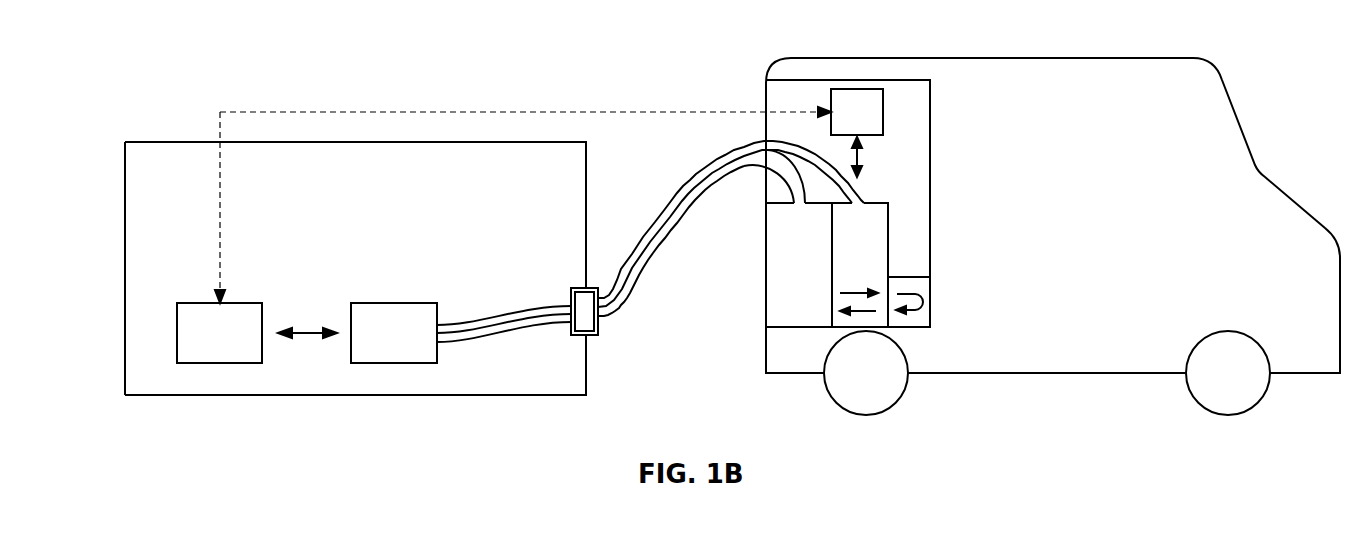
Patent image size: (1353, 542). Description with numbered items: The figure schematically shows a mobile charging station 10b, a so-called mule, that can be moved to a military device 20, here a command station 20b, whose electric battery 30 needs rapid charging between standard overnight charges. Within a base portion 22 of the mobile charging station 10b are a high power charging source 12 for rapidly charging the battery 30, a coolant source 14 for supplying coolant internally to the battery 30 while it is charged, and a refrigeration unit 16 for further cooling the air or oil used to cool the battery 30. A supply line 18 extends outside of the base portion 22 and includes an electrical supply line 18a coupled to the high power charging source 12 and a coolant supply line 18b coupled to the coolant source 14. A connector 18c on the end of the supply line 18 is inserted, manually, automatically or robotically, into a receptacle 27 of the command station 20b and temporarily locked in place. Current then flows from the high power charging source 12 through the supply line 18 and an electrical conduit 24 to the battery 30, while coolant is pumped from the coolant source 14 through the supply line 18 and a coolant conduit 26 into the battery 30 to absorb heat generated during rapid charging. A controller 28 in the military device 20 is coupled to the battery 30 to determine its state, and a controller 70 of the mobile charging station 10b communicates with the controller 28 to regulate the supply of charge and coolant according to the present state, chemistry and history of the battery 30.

The mobile charging station 10b is at (880, 45).
The high power charging source 12 is at (783, 258).
The coolant source 14 is at (846, 258).
The refrigeration unit 16 is at (897, 277).
The supply line 18 is at (717, 150).
The electrical supply line 18a is at (635, 280).
The coolant supply line 18b is at (648, 226).
The connector 18c is at (590, 331).
The military device 20 is at (180, 142).
The command station 20b is at (142, 217).
The base portion 22 is at (930, 125).
The electrical conduit 24 is at (517, 328).
The coolant conduit 26 is at (448, 327).
The receptacle 27 is at (577, 283).
The controller 28 is at (206, 345).
The electric battery 30 is at (380, 345).
The controller 70 is at (843, 125).